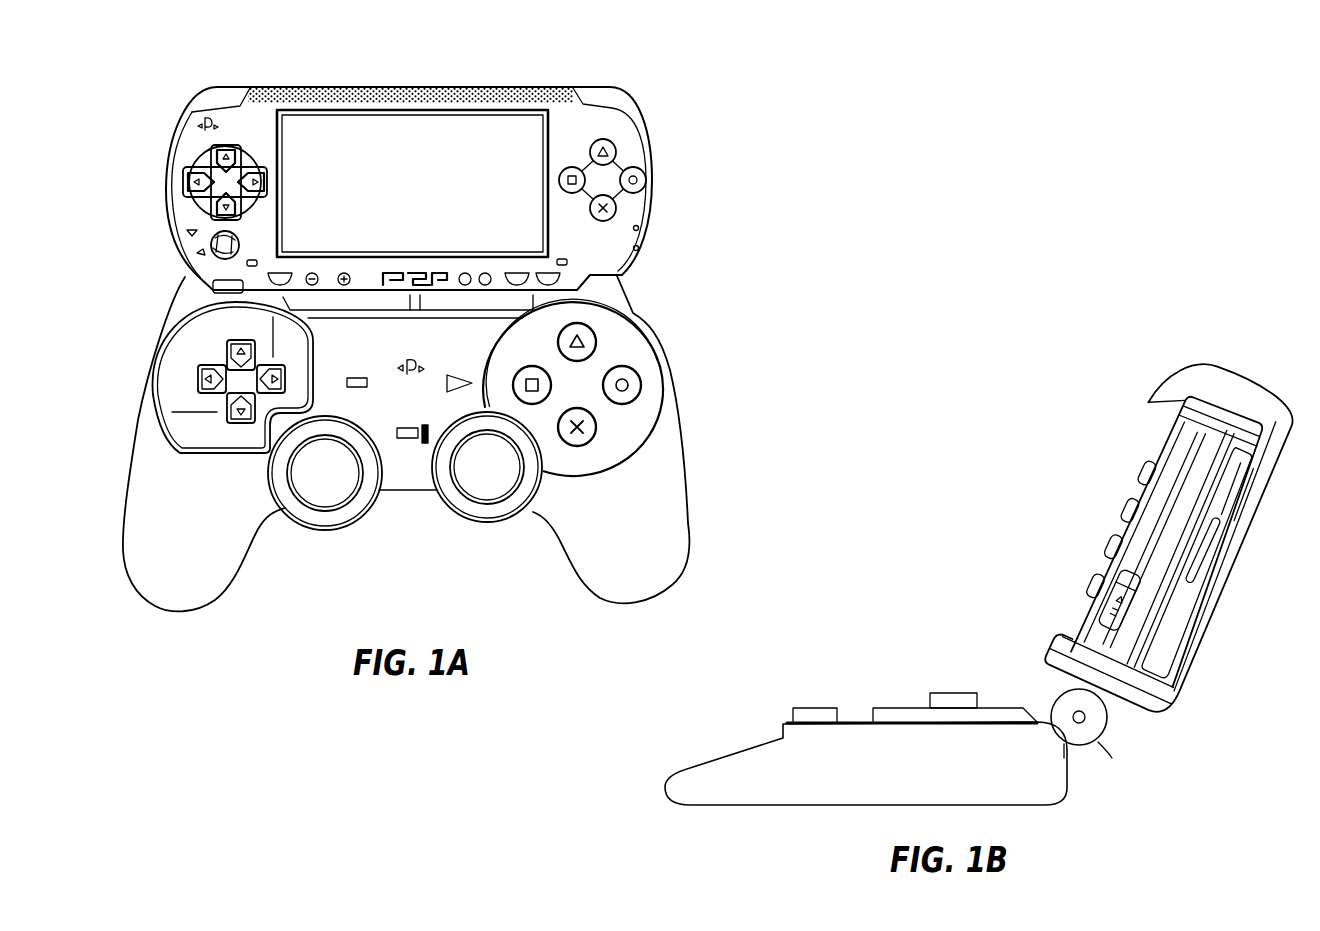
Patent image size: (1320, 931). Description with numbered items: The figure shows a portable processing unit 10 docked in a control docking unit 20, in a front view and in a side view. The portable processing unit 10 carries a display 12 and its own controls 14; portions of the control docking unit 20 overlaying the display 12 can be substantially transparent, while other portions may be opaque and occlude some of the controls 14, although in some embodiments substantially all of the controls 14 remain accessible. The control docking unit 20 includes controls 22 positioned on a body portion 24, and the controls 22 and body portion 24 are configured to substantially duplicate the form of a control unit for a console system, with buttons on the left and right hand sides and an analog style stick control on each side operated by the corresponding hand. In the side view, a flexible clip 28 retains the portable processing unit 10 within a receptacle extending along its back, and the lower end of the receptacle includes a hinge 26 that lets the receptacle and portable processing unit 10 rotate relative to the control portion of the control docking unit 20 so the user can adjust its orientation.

In FIG. 1A, the portable processing unit 10 is at (432, 172).
In FIG. 1B, the portable processing unit 10 is at (1075, 520).
In FIG. 1A, the display 12 is at (412, 135).
In FIG. 1A, the controls 14 is at (198, 152).
In FIG. 1A, the control docking unit 20 is at (630, 604).
In FIG. 1B, the control docking unit 20 is at (802, 810).
In FIG. 1A, the controls 22 is at (648, 330).
In FIG. 1A, the body portion 24 is at (125, 511).
In FIG. 1B, the hinge 26 is at (1096, 743).
In FIG. 1B, the flexible clip 28 is at (1170, 386).